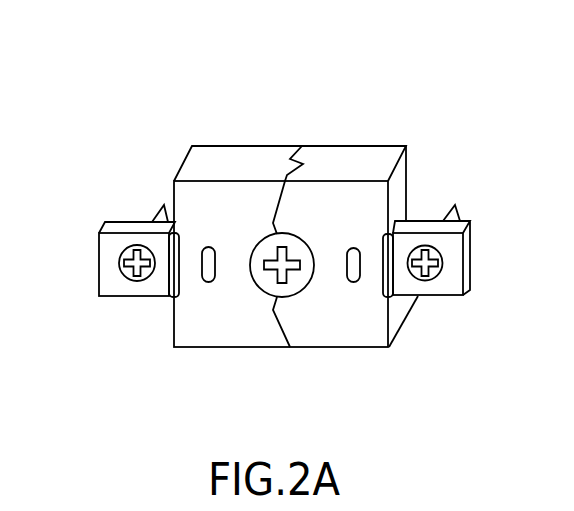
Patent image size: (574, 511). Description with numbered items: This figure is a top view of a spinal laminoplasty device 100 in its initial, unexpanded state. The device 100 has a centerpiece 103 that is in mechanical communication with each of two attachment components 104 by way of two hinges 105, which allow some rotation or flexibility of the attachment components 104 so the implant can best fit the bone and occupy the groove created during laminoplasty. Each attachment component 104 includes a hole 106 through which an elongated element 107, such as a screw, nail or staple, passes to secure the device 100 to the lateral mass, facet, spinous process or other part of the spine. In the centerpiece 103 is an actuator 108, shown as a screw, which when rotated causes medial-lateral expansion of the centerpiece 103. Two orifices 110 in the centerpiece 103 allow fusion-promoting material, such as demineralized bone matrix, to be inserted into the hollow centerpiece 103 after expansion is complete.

The device 100 is at (226, 90).
The centerpiece 103 is at (370, 158).
The attachment component 104 is at (123, 297).
The hinge 105 is at (173, 290).
The hole 106 is at (125, 250).
The elongated element 107 is at (127, 275).
The actuator 108 is at (295, 278).
The orifice 110 is at (208, 250).